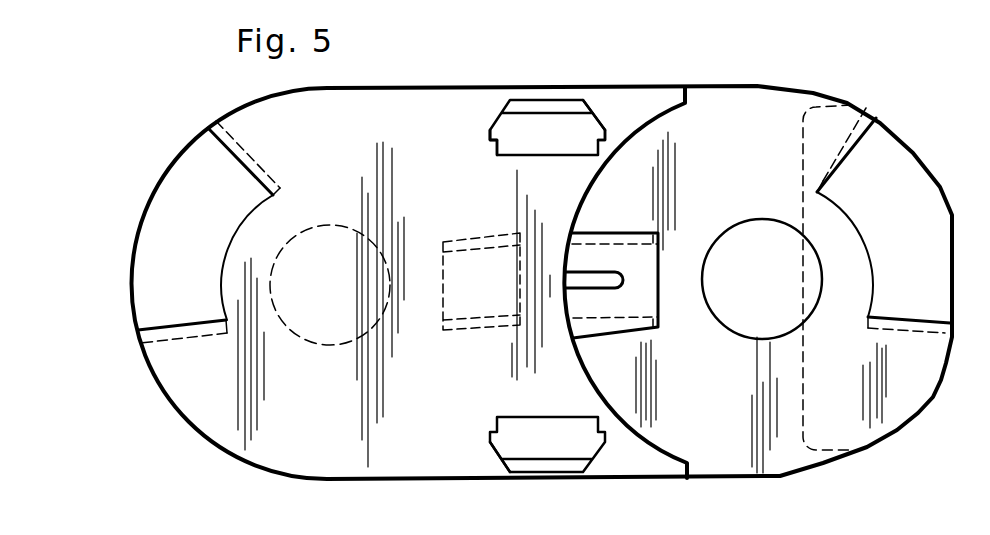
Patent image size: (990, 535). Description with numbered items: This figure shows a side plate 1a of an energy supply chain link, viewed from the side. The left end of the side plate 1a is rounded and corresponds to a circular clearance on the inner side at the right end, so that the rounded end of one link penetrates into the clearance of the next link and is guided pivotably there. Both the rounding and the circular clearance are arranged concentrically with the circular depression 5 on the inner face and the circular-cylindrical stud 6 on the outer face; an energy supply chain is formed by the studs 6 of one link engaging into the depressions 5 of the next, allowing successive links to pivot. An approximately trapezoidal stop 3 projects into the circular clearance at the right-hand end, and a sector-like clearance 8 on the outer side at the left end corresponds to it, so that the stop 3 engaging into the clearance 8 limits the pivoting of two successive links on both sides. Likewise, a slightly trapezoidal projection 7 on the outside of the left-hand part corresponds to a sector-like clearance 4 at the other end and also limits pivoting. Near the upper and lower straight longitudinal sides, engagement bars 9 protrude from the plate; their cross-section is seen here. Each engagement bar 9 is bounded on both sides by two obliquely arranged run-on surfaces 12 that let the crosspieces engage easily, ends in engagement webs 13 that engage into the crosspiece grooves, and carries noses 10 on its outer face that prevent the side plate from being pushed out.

The side plate 1a is at (224, 424).
The stop 3 is at (626, 237).
The clearance 4 is at (910, 200).
The circular depression 5 is at (773, 247).
The stud 6 is at (315, 340).
The projection 7 is at (458, 332).
The sector-like clearance 8 is at (160, 222).
The engagement bar 9 is at (592, 106).
The nose 10 is at (548, 113).
The run-on surface 12 is at (491, 128).
The engagement web 13 is at (490, 131).